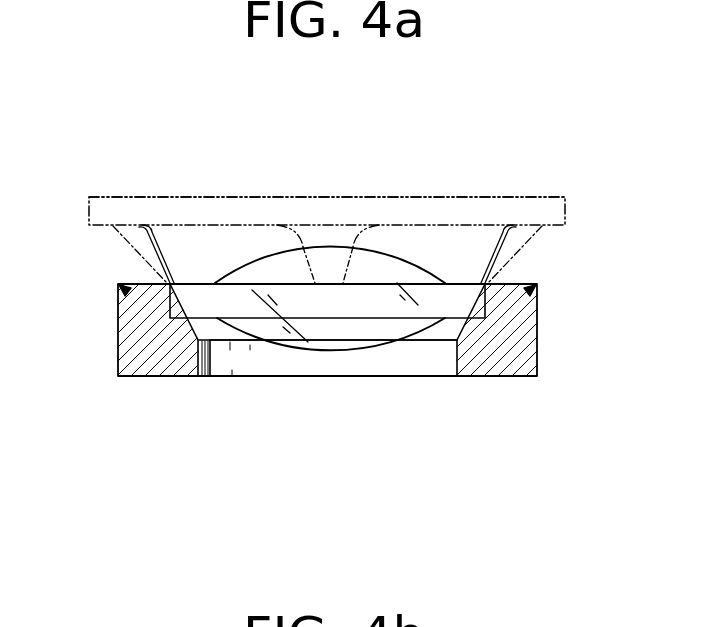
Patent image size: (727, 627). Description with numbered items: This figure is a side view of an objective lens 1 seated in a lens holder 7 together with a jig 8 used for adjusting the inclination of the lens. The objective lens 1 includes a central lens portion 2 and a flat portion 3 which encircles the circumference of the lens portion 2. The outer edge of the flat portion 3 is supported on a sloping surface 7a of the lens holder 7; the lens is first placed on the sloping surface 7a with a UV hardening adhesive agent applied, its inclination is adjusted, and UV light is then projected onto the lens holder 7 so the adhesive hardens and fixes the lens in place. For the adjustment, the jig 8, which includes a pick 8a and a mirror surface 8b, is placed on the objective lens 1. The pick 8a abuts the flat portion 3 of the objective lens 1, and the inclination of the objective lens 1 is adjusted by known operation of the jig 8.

The objective lens 1 is at (377, 248).
The lens portion 2 is at (233, 263).
The flat portion 3 is at (402, 308).
The lens holder 7 is at (126, 345).
The sloping surface 7a is at (210, 330).
The jig 8 is at (543, 182).
The pick 8a is at (126, 243).
The mirror surface 8b is at (262, 197).